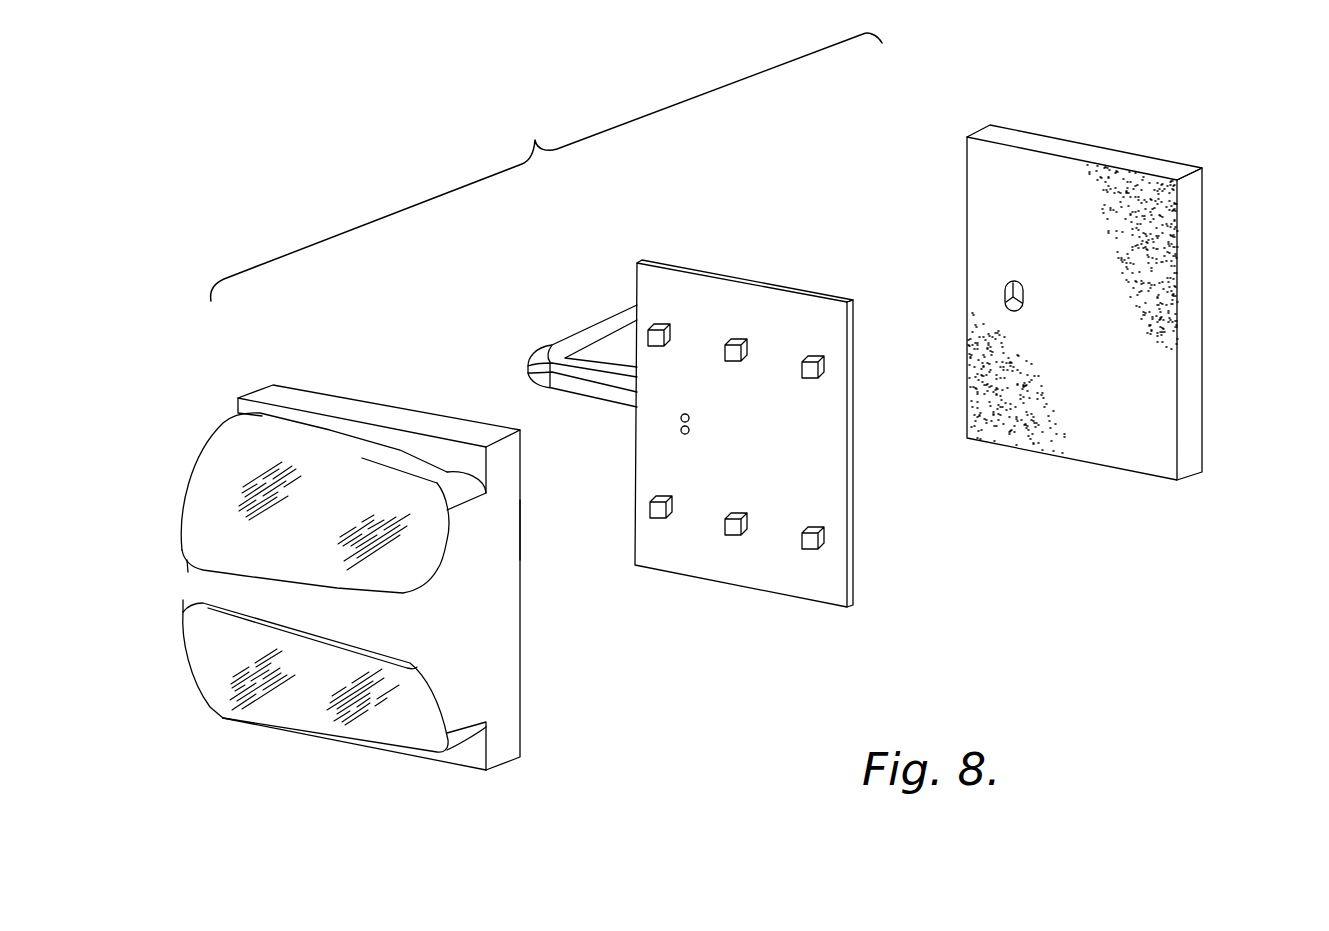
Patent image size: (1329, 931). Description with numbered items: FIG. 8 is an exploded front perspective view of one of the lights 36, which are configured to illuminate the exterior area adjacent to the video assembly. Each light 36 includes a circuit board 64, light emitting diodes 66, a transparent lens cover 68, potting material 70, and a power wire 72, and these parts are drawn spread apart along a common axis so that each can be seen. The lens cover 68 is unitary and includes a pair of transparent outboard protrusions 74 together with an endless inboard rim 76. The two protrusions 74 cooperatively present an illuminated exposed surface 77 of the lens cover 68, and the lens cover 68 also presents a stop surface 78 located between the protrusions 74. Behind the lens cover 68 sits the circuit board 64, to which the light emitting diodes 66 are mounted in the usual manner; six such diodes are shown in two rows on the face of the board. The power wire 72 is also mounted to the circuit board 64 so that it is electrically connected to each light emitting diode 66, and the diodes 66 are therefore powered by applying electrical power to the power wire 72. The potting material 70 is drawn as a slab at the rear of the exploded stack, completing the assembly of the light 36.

The light 36 is at (1208, 122).
The circuit board 64 is at (823, 483).
The light emitting diodes 66 is at (808, 358).
The transparent lens cover 68 is at (505, 680).
The potting material 70 is at (1132, 450).
The power wire 72 is at (600, 330).
The transparent outboard protrusions 74 is at (283, 455).
The endless inboard rim 76 is at (523, 535).
The illuminated exposed surface 77 is at (242, 458).
The stop surface 78 is at (392, 614).